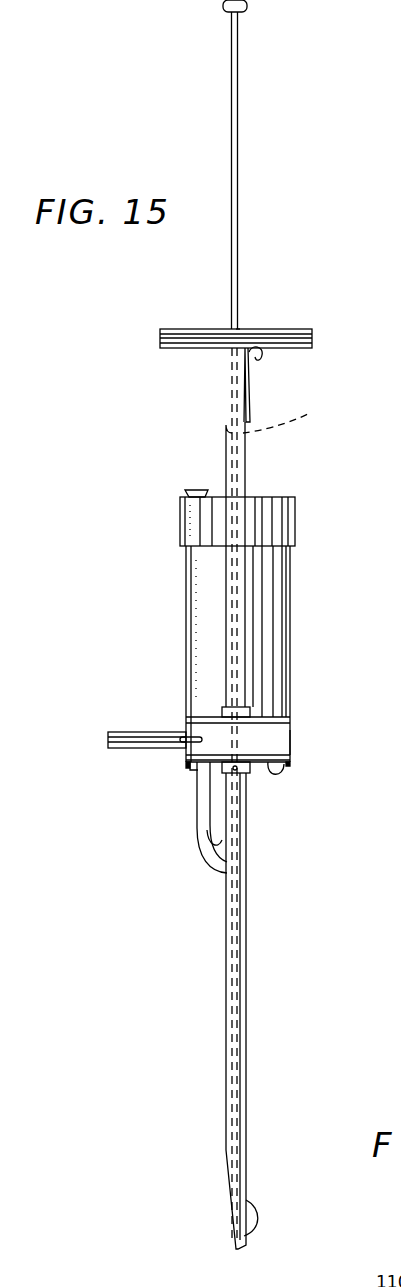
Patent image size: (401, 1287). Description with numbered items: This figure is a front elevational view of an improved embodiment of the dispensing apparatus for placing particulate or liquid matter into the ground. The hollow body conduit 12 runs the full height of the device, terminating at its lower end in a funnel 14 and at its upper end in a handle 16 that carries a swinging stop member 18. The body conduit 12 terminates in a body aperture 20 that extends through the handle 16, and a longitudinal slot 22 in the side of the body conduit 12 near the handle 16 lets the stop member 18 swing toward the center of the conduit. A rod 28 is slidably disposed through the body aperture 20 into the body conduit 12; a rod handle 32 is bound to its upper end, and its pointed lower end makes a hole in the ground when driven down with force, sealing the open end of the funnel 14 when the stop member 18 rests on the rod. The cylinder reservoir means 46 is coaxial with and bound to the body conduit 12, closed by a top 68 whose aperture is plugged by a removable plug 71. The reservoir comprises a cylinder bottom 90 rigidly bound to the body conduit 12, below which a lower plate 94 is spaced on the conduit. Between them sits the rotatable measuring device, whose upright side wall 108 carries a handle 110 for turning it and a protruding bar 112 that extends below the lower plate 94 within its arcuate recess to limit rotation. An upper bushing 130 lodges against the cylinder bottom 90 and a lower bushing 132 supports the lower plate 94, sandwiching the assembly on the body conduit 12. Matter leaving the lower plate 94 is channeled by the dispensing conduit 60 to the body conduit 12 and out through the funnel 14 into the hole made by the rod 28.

The body conduit 12 is at (242, 484).
The funnel 14 is at (244, 1190).
The handle 16 is at (295, 340).
The swinging stop member 18 is at (250, 397).
The body aperture 20 is at (239, 330).
The slot 22 is at (287, 390).
The rod 28 is at (237, 181).
The rod handle 32 is at (243, 4).
The cylinder reservoir means 46 is at (290, 618).
The dispensing conduit 60 is at (212, 846).
The top 68 is at (265, 521).
The plug 71 is at (198, 490).
The cylinder bottom 90 is at (290, 722).
The lower plate 94 is at (292, 762).
The upright side wall 108 is at (292, 738).
The handle 110 is at (108, 746).
The protruding bar 112 is at (187, 764).
The upper bushing 130 is at (236, 712).
The lower bushing 132 is at (244, 774).